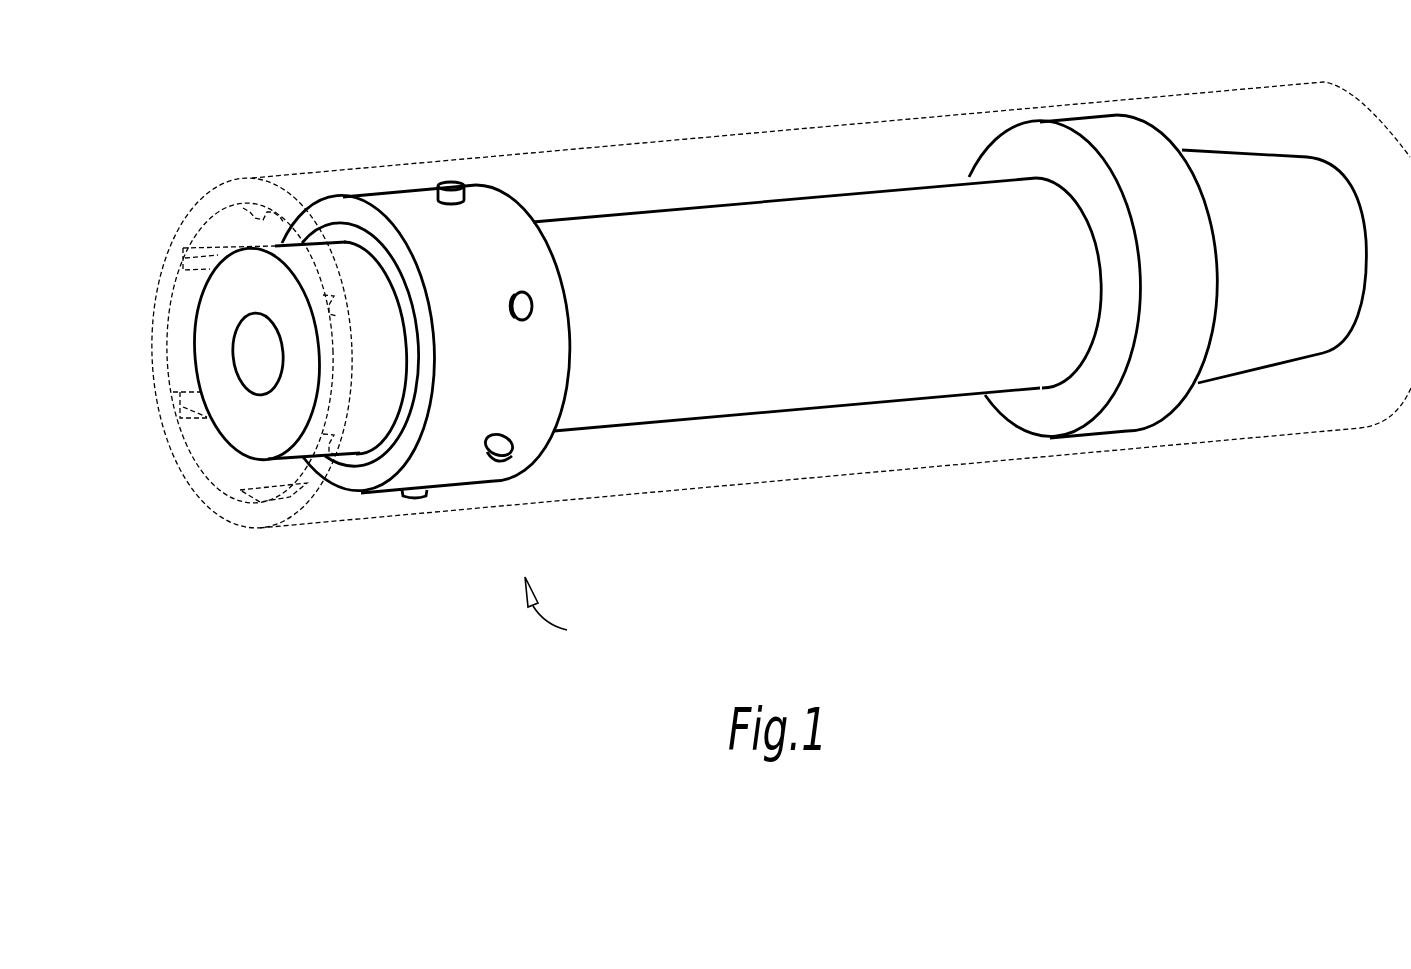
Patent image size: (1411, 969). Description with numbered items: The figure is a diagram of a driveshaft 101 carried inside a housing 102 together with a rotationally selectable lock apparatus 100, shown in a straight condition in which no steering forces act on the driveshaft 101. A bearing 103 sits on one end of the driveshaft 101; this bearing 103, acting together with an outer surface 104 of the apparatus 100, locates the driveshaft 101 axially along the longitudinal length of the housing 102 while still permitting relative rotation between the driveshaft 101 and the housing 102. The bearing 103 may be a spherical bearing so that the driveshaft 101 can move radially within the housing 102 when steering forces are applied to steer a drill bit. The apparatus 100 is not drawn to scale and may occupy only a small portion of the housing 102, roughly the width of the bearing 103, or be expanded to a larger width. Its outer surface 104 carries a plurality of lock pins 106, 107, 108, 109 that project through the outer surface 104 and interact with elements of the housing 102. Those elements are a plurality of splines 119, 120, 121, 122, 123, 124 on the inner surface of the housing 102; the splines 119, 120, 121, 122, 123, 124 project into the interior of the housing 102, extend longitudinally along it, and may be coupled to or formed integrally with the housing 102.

The rotationally selectable lock apparatus 100 is at (563, 614).
The driveshaft 101 is at (780, 198).
The housing 102 is at (775, 128).
The bearing 103 is at (1097, 130).
The outer surface 104 is at (393, 198).
The lock pin 106 is at (450, 181).
The lock pin 107 is at (531, 305).
The lock pin 108 is at (507, 463).
The lock pin 109 is at (408, 500).
The spline 119 is at (183, 403).
The spline 120 is at (183, 262).
The spline 121 is at (250, 215).
The spline 122 is at (326, 300).
The spline 123 is at (327, 442).
The spline 124 is at (250, 487).